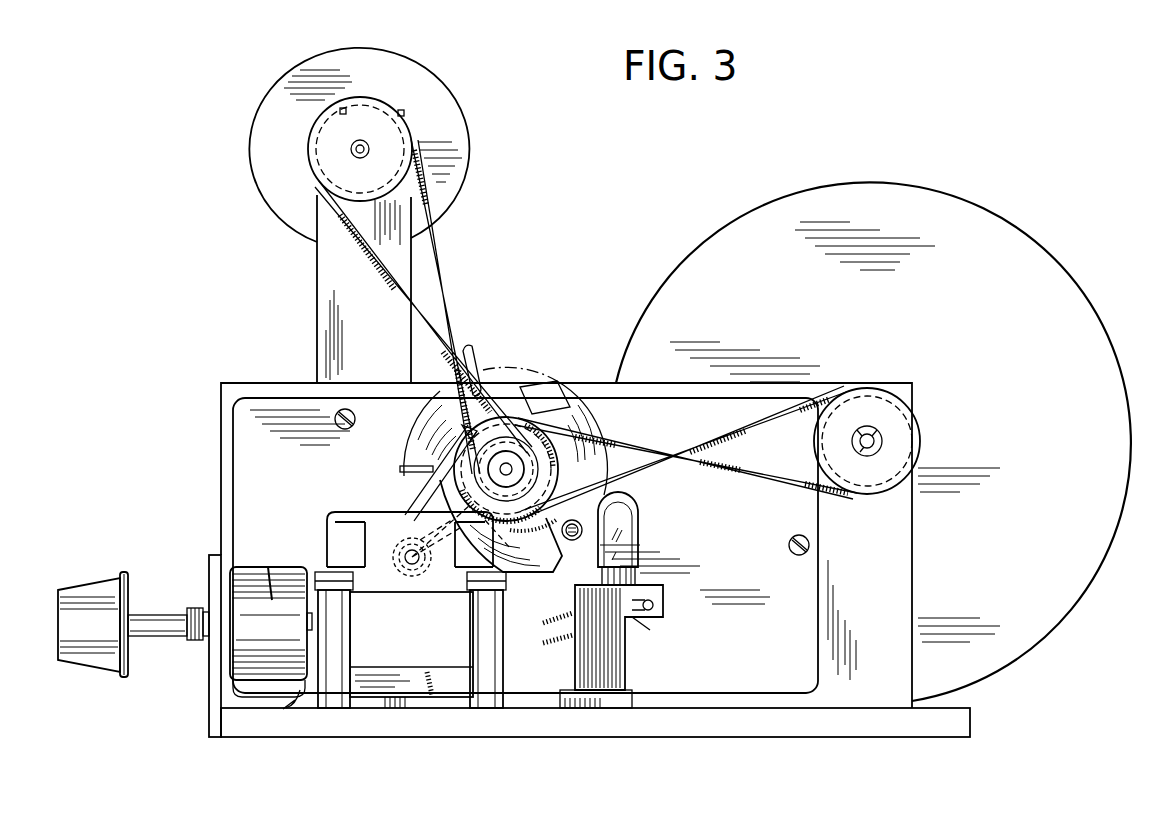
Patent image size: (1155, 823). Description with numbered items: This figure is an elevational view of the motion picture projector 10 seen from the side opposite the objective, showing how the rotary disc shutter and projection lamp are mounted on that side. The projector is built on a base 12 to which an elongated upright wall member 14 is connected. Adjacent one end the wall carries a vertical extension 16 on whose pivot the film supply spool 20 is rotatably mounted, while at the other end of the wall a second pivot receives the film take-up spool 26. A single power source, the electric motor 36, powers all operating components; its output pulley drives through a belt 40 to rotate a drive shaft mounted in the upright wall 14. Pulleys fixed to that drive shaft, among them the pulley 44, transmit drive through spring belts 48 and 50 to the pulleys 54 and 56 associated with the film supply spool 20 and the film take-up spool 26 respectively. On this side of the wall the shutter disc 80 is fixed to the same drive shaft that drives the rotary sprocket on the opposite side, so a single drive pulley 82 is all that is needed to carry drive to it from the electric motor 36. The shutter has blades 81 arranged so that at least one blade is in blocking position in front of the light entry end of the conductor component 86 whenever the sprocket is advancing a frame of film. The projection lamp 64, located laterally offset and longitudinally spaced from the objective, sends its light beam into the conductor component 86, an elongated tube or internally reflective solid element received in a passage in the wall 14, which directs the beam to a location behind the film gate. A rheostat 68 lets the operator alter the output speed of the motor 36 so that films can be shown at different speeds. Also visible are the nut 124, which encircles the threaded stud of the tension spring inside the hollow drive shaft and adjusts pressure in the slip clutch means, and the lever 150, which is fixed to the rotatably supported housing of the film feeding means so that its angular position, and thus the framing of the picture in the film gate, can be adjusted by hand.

The motion picture projector 10 is at (622, 214).
The base 12 is at (714, 722).
The upright wall member 14 is at (873, 583).
The vertical extension 16 is at (322, 290).
The film supply spool 20 is at (430, 78).
The film take-up spool 26 is at (950, 210).
The electric motor 36 is at (423, 633).
The belt 40 is at (440, 495).
The pulley 44 is at (470, 468).
The spring belt 48 is at (444, 252).
The spring belt 50 is at (786, 486).
The pulley 54 is at (320, 152).
The pulley 56 is at (905, 425).
The projection lamp 64 is at (625, 520).
The rheostat 68 is at (261, 586).
The shutter disc 80 is at (526, 403).
The blades 81 is at (566, 400).
The drive pulley 82 is at (560, 500).
The conductor component 86 is at (592, 534).
The nut 124 is at (527, 460).
The lever 150 is at (474, 352).